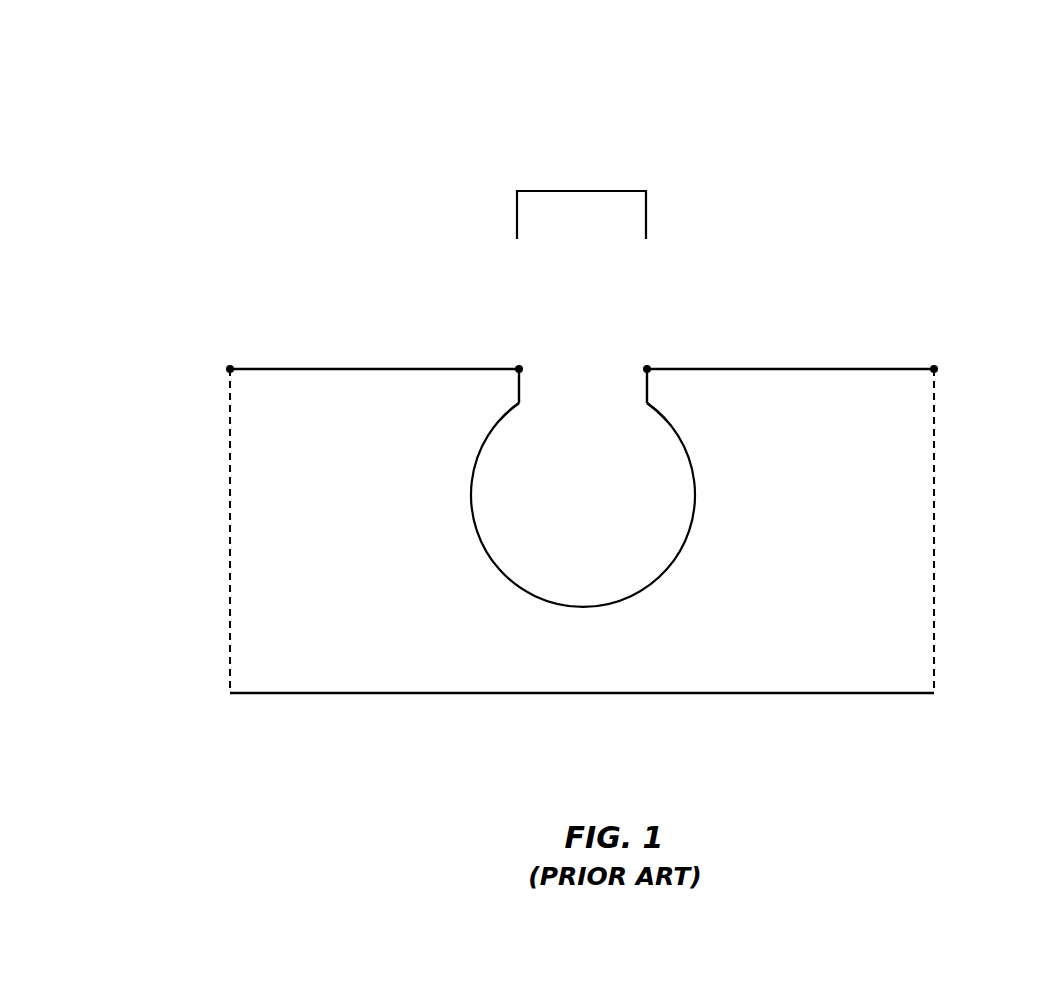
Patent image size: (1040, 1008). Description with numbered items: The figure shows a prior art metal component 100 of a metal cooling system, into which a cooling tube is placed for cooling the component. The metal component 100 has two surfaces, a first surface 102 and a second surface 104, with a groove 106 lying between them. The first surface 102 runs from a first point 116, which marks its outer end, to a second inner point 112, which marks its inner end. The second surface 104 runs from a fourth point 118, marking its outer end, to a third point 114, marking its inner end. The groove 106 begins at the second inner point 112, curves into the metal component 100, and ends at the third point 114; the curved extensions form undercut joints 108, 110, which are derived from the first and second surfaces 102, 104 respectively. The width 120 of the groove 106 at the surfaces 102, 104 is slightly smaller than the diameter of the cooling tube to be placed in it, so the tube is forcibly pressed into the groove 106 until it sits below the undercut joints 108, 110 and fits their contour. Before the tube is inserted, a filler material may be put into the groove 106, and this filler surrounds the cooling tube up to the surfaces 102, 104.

The metal component 100 is at (843, 118).
The first surface 102 is at (357, 368).
The second surface 104 is at (775, 368).
The groove 106 is at (583, 402).
The undercut joint 108 is at (512, 405).
The undercut joint 110 is at (650, 407).
The second inner point 112 is at (518, 366).
The third point 114 is at (647, 366).
The first point 116 is at (230, 370).
The fourth point 118 is at (934, 370).
The width 120 is at (581, 182).